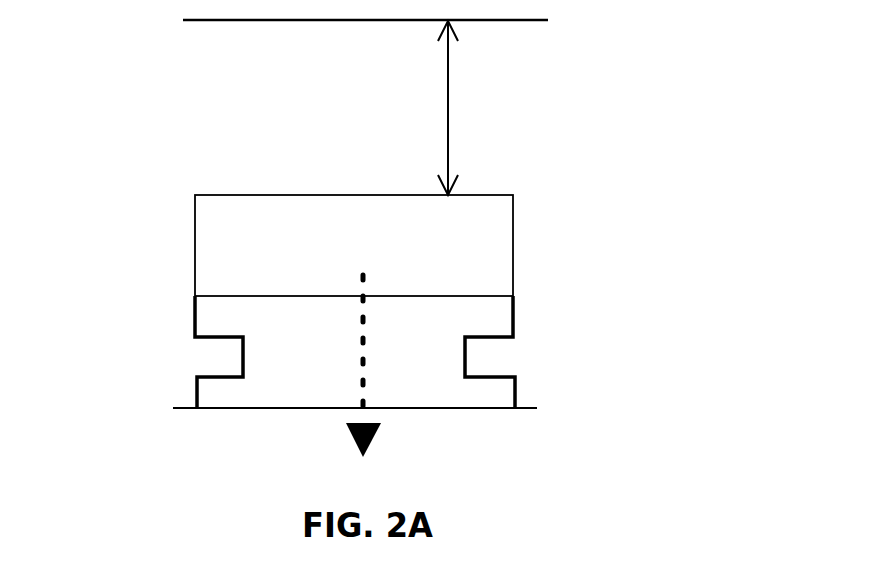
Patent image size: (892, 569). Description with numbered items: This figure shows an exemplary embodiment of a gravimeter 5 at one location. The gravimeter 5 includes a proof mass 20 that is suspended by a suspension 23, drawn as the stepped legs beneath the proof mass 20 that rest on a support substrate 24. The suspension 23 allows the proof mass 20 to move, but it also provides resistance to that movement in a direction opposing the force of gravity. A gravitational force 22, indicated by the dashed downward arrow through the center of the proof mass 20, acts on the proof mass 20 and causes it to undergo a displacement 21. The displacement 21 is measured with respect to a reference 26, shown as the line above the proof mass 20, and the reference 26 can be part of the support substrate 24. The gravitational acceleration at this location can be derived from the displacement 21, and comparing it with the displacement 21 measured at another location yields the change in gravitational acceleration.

The gravimeter 5 is at (633, 172).
The proof mass 20 is at (202, 242).
The displacement 21 is at (445, 108).
The gravitational force 22 is at (362, 387).
The suspension 23 is at (197, 390).
The support substrate 24 is at (178, 408).
The reference 26 is at (223, 20).